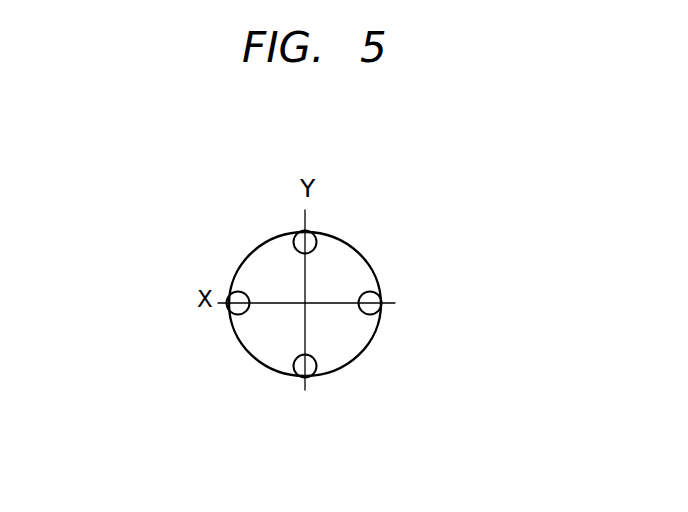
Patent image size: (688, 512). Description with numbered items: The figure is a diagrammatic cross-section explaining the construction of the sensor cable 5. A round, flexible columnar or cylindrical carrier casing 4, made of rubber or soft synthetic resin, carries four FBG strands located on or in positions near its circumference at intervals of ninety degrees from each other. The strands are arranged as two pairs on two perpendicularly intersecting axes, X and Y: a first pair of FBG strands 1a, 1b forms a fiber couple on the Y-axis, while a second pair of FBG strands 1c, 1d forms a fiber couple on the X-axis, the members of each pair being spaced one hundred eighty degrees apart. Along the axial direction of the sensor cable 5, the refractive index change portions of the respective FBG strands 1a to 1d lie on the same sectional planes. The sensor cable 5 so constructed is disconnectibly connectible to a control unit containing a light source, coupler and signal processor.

The FBG strand 1a is at (292, 238).
The FBG strand 1b is at (308, 375).
The FBG strand 1c is at (228, 311).
The FBG strand 1d is at (378, 309).
The carrier casing 4 is at (253, 265).
The sensor cable 5 is at (316, 274).